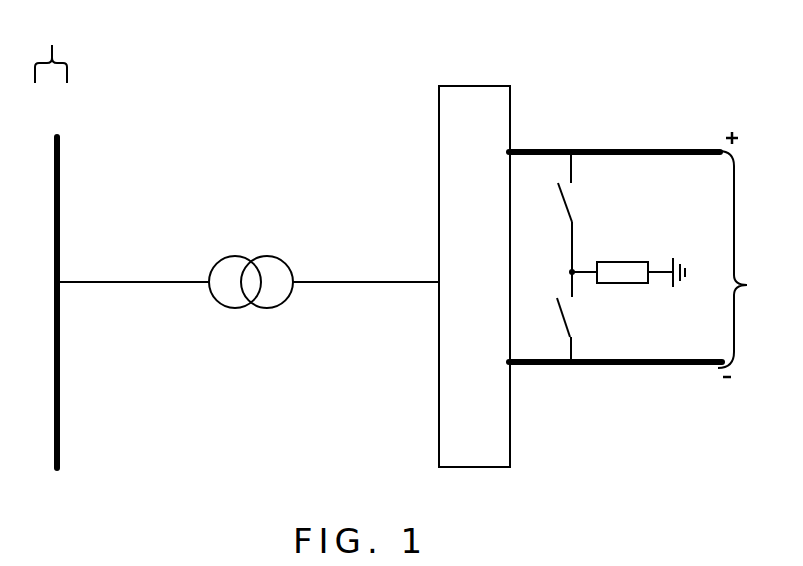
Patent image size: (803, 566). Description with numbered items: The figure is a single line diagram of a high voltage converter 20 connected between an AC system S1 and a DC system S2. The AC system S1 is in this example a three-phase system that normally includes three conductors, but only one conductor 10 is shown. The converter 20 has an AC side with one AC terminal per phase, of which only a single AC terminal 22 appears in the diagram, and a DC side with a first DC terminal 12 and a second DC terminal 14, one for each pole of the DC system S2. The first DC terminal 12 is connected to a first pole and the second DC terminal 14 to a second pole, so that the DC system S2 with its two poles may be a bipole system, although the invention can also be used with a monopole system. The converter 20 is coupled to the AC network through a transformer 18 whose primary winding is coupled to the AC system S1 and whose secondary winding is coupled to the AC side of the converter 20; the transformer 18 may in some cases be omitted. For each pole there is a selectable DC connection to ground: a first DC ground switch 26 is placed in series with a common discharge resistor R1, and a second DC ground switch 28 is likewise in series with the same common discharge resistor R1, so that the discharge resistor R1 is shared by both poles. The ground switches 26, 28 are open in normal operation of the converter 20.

The conductor 10 is at (55, 220).
The first DC terminal 12 is at (711, 148).
The second DC terminal 14 is at (710, 372).
The transformer 18 is at (242, 258).
The converter 20 is at (474, 276).
The AC terminal 22 is at (439, 282).
The first DC ground switch 26 is at (582, 212).
The second DC ground switch 28 is at (581, 317).
The common discharge resistor R1 is at (627, 287).
The AC system S1 is at (51, 49).
The DC system S2 is at (749, 259).